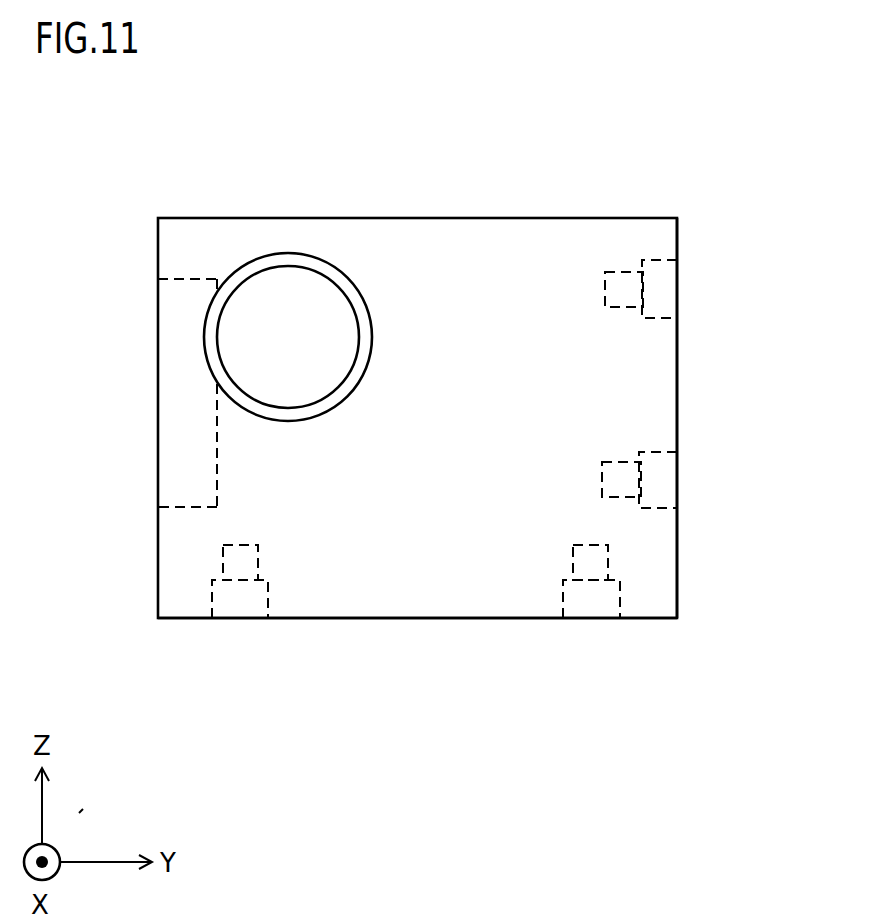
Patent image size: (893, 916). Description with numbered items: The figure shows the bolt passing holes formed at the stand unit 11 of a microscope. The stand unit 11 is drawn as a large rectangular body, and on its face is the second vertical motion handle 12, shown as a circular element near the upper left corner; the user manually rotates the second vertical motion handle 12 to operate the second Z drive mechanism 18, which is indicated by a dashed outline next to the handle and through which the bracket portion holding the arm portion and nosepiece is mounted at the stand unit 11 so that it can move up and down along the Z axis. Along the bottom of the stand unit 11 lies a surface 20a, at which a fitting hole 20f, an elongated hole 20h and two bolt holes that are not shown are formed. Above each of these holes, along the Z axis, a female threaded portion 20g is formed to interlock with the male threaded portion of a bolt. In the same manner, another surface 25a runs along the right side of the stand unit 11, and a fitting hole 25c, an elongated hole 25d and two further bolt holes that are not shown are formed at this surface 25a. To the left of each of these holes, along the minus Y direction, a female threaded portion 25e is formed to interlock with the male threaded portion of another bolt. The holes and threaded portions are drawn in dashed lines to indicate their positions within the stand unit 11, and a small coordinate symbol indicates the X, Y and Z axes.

The stand unit 11 is at (196, 218).
The second vertical motion handle 12 is at (289, 253).
The second Z drive mechanism 18 is at (177, 377).
The surface 20a is at (170, 619).
The fitting hole 20f is at (212, 592).
The female threaded portion 20g is at (223, 553).
The elongated hole 20h is at (563, 587).
The surface 25a is at (683, 229).
The fitting hole 25c is at (663, 455).
The elongated hole 25d is at (666, 262).
The female threaded portion 25e is at (617, 270).